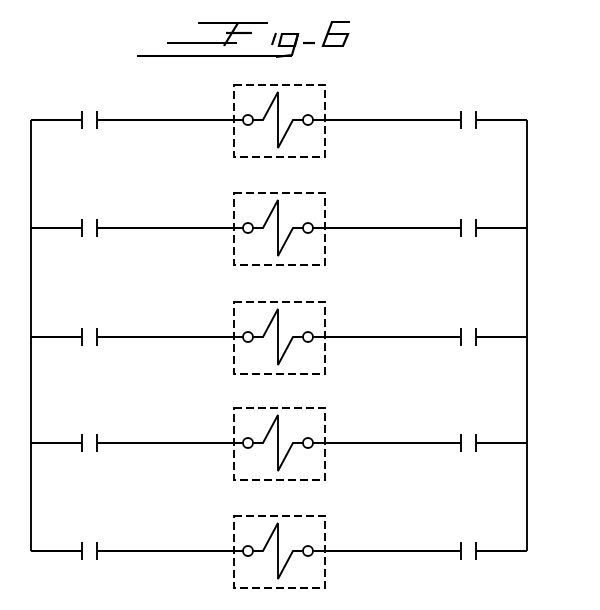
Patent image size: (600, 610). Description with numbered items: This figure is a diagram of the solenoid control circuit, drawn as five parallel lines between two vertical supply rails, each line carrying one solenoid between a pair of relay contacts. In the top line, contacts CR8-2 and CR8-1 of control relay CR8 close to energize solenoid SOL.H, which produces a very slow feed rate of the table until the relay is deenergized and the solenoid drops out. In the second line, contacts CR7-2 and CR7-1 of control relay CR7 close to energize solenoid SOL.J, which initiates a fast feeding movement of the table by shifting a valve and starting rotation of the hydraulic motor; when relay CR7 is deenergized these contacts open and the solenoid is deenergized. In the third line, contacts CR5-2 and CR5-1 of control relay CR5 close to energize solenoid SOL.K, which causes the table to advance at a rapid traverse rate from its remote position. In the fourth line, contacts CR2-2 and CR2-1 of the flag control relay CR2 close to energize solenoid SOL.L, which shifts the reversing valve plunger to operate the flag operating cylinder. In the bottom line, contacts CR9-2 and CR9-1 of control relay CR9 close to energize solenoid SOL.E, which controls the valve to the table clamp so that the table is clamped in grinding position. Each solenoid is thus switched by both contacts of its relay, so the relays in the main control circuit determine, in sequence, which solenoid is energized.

The contact CR8-2 is at (137, 107).
The solenoid H SOL.H is at (279, 110).
The contact CR8-1 is at (420, 107).
The contact CR7-2 is at (137, 215).
The solenoid J SOL.J is at (279, 218).
The contact CR7-1 is at (420, 215).
The contact CR5-2 is at (137, 324).
The solenoid K SOL.K is at (279, 327).
The contact CR5-1 is at (420, 324).
The contact CR2-2 is at (137, 430).
The solenoid L SOL.L is at (279, 433).
The contact CR2-1 is at (420, 430).
The contact CR9-2 is at (137, 538).
The solenoid E SOL.E is at (279, 541).
The contact CR9-1 is at (420, 538).